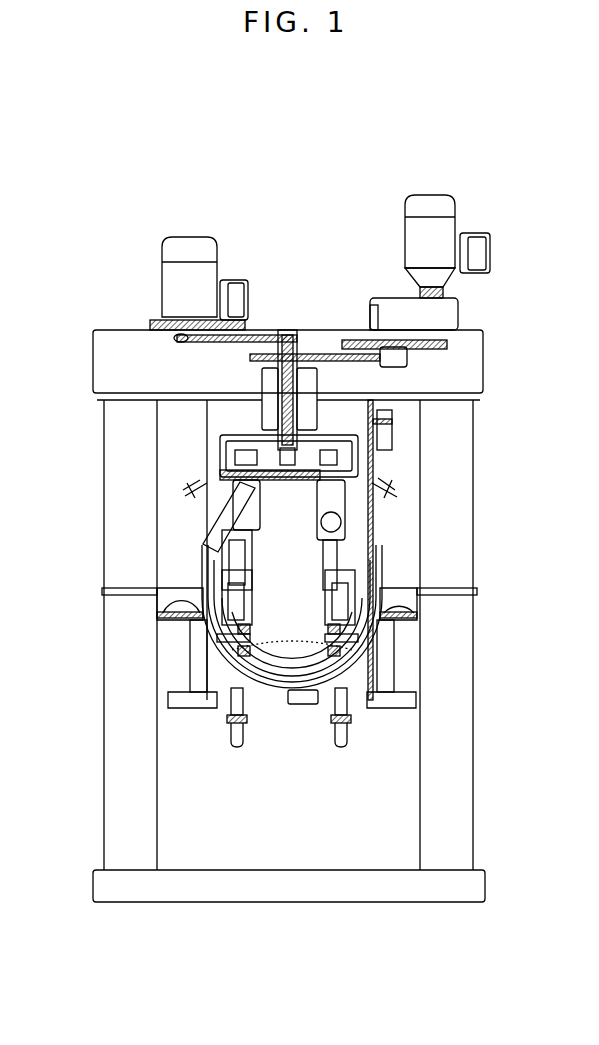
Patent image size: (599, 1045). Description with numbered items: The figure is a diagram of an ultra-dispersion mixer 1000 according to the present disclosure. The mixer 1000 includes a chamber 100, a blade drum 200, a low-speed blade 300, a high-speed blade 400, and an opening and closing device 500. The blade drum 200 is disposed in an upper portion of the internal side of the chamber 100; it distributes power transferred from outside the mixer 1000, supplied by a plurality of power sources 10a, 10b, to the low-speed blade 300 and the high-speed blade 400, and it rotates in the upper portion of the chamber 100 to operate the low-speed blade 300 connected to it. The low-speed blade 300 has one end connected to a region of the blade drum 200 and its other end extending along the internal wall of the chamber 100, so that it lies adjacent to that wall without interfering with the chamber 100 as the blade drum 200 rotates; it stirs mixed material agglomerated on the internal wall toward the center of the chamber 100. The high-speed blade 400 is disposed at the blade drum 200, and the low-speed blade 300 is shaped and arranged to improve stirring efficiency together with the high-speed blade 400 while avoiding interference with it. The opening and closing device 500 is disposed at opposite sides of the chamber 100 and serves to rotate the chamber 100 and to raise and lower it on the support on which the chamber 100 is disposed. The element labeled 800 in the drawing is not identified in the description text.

The ultra-dispersion mixer 1000 is at (114, 219).
The power source 10a is at (220, 248).
The power source 10b is at (457, 205).
The chamber 100 is at (383, 555).
The blade drum 200 is at (375, 455).
The low-speed blade 300 is at (210, 517).
The high-speed blade 400 is at (352, 697).
The opening and closing device 500 is at (383, 597).
The rotating shaft 800 is at (318, 420).